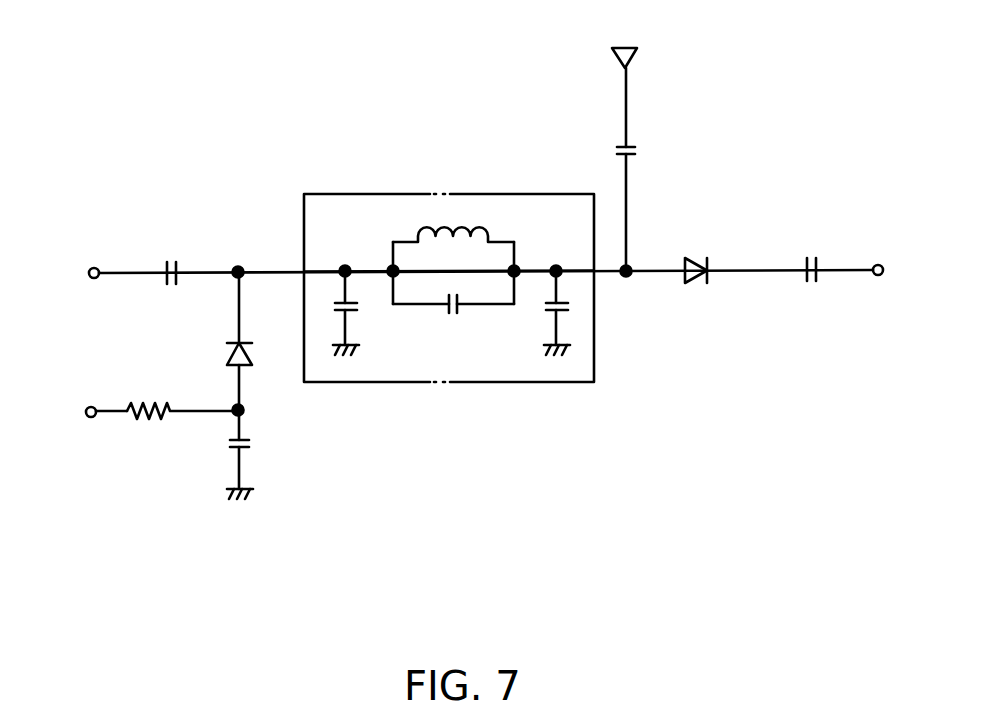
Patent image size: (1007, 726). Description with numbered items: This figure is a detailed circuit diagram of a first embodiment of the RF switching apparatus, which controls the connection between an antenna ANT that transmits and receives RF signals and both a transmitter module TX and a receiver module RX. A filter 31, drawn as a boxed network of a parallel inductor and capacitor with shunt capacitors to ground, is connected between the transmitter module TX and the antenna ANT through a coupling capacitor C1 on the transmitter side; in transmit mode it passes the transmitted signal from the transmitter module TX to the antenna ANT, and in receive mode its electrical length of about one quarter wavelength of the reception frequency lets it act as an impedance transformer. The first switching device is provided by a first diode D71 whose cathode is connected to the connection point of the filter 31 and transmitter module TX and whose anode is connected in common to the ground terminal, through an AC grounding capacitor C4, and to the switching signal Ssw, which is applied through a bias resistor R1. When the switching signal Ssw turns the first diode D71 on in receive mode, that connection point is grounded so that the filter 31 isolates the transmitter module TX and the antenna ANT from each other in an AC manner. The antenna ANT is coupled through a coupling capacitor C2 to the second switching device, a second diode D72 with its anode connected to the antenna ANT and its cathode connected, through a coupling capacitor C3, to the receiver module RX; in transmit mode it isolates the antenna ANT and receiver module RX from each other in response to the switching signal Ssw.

The filter 31 is at (353, 194).
The coupling capacitor C1 is at (172, 257).
The coupling capacitor C2 is at (648, 204).
The coupling capacitor C3 is at (812, 253).
The AC grounding capacitor C4 is at (259, 454).
The first diode D71 is at (212, 341).
The second diode D72 is at (699, 254).
The bias resistor R1 is at (182, 395).
The transmitter module TX is at (72, 275).
The receiver module RX is at (900, 271).
The antenna ANT is at (624, 81).
The switching signal Ssw is at (77, 412).